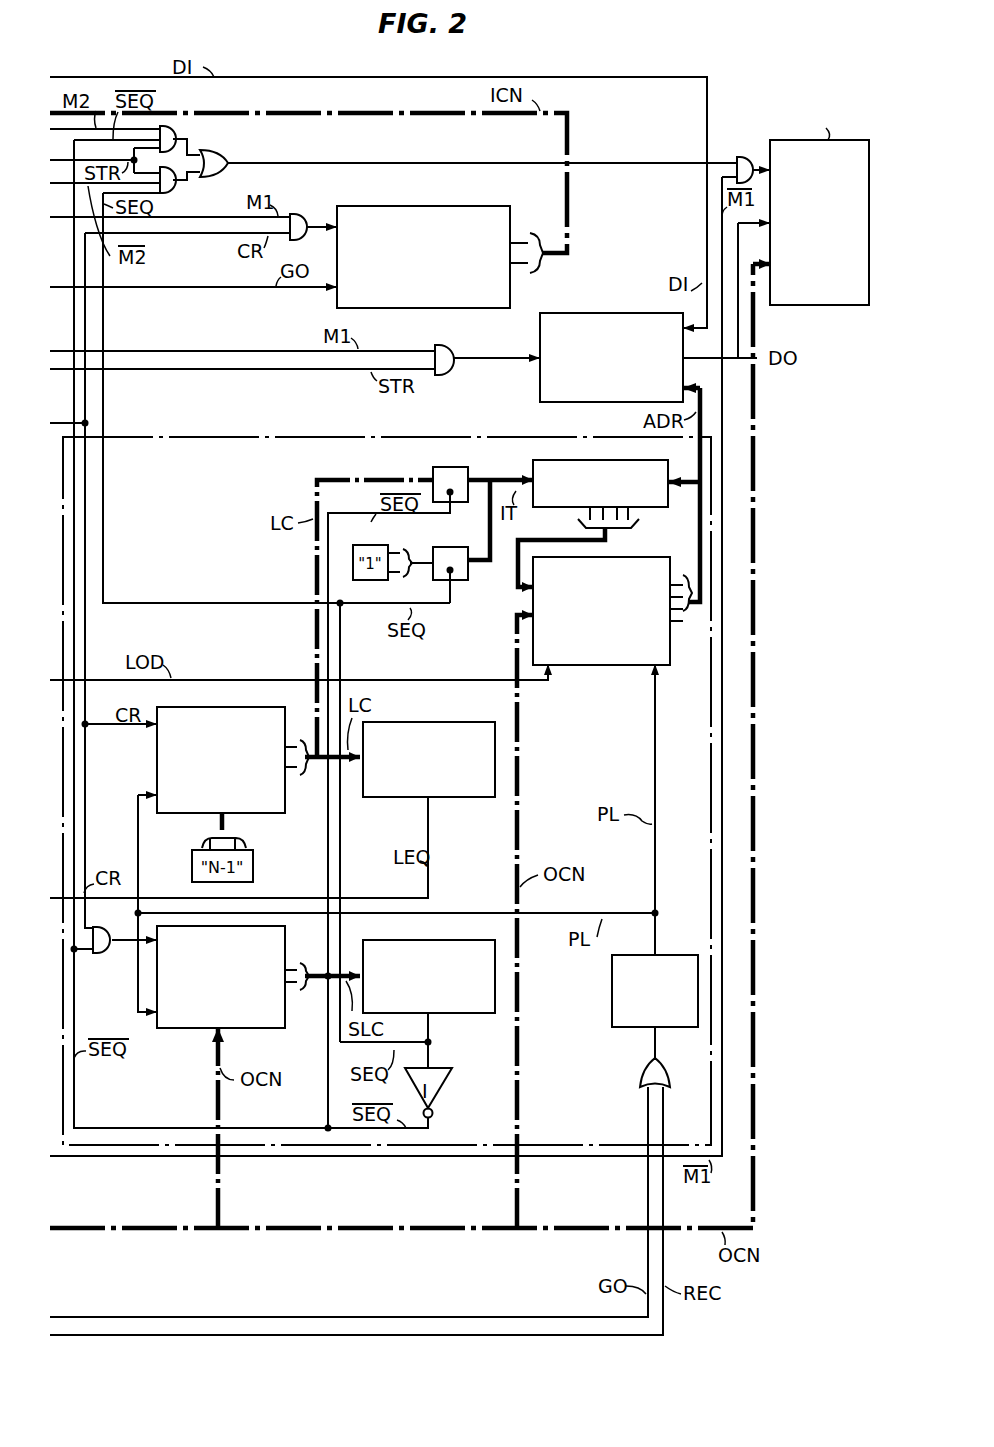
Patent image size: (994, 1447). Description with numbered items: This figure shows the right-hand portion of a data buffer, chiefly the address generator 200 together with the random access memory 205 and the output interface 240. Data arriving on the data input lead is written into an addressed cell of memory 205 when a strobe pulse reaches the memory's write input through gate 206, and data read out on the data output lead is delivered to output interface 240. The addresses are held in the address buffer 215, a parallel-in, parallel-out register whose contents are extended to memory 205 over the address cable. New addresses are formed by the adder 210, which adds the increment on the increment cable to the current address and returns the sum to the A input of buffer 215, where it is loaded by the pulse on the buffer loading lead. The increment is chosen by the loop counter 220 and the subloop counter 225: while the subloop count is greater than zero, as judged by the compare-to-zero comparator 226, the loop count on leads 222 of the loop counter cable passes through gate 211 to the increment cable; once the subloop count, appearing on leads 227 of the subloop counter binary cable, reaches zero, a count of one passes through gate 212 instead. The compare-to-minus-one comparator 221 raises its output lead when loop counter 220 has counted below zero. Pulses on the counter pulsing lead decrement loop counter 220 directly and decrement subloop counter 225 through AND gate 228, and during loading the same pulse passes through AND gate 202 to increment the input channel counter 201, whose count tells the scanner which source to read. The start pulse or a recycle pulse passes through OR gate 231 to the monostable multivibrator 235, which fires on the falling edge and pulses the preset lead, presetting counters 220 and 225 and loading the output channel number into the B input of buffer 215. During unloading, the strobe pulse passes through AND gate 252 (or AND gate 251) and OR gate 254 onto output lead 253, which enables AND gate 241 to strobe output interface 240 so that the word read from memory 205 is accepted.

The address generator 200 is at (421, 437).
The input channel counter 201 is at (475, 206).
The AND gate 202 is at (306, 203).
The random access memory 205 is at (641, 312).
The gate 206 is at (456, 348).
The adder 210 is at (656, 510).
The gate 211 is at (464, 468).
The gate 212 is at (468, 576).
The address buffer 215 is at (601, 668).
The loop counter 220 is at (221, 707).
The compare-to-minus-one comparator 221 is at (440, 722).
The leads of loop counter cable 222 is at (297, 776).
The subloop counter 225 is at (186, 1030).
The compare-to-zero comparator 226 is at (478, 1014).
The leads of subloop counter binary cable 227 is at (296, 986).
The AND gate 228 is at (110, 958).
The OR gate 231 is at (640, 1074).
The monostable multivibrator 235 is at (612, 994).
The output interface 240 is at (833, 306).
The AND gate 241 is at (741, 156).
The AND gate 251 is at (178, 130).
The AND gate 252 is at (179, 188).
The output lead 253 is at (380, 166).
The OR gate 254 is at (233, 159).